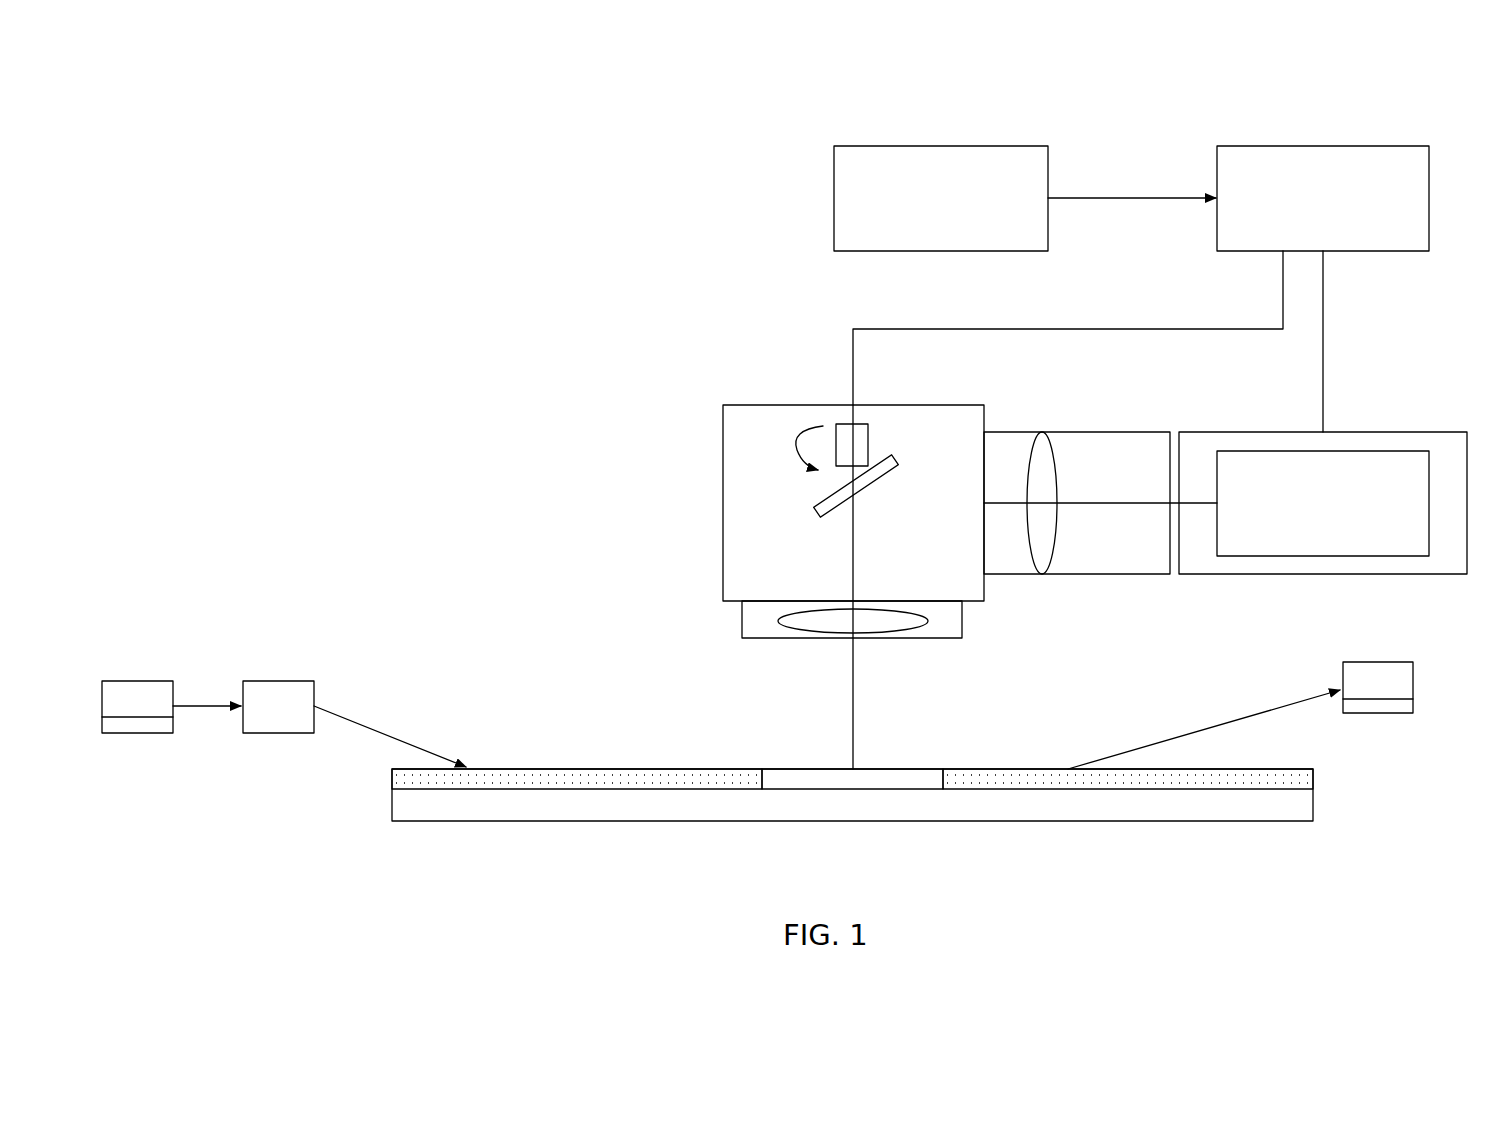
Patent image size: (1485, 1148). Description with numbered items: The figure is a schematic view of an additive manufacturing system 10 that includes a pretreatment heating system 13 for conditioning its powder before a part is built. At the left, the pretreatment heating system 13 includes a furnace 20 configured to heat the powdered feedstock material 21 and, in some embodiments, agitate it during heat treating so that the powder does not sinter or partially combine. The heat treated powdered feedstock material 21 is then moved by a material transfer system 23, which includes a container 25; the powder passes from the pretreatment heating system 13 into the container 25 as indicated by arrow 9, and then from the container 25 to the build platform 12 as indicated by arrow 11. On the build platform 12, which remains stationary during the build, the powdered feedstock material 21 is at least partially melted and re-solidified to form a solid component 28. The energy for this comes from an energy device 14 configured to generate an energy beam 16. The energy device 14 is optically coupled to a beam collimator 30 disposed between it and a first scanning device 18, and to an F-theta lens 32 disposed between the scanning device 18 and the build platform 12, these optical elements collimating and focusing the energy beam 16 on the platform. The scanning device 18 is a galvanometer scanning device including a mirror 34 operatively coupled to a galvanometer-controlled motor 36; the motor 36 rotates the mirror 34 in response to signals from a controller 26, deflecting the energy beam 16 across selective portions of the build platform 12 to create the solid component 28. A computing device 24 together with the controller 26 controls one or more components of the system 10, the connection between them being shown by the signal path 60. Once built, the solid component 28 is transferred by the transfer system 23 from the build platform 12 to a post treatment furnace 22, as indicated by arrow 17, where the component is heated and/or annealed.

The additive manufacturing system 10 is at (437, 102).
The computing device 24 is at (940, 146).
The controller 26 is at (1293, 146).
The control signal 60 is at (1090, 198).
The first scanning device 18 is at (745, 405).
The galvanometer-controlled motor 36 is at (858, 424).
The mirror 34 is at (893, 460).
The F-theta lens 32 is at (878, 638).
The beam collimator 30 is at (1048, 438).
The energy beam 16 is at (1095, 503).
The energy device 14 is at (1375, 451).
The furnace 22 is at (1400, 713).
The arrow 17 is at (1218, 723).
The material transfer system 23 is at (225, 608).
The pretreatment heating system 13 is at (118, 681).
The furnace 20 is at (130, 733).
The arrow 9 is at (187, 706).
The container 25 is at (265, 681).
The arrow 11 is at (360, 722).
The build platform 12 is at (1298, 821).
The powdered feedstock material 21 is at (568, 769).
The solid component 28 is at (875, 769).